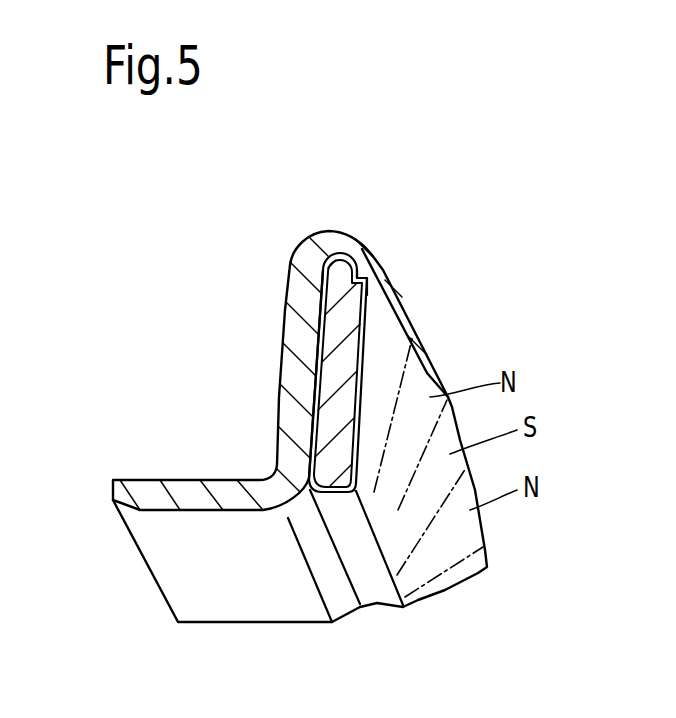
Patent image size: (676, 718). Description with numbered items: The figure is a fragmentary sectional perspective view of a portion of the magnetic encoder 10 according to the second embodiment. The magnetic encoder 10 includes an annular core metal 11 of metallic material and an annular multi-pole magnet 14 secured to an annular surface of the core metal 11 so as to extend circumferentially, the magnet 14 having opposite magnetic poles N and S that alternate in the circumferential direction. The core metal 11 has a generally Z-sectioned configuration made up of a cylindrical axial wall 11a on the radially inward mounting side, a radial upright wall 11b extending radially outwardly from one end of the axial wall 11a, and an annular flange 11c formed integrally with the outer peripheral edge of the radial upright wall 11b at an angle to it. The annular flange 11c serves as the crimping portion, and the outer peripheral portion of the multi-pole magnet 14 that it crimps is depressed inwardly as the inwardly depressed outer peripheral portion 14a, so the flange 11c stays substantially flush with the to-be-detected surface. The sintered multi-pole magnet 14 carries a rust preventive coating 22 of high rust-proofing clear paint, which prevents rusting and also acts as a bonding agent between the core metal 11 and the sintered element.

The magnetic encoder 10 is at (123, 233).
The core metal 11 is at (110, 295).
The cylindrical axial wall 11a is at (195, 492).
The radial upright wall 11b is at (289, 359).
The annular flange 11c is at (341, 229).
The multi-pole magnet 14 is at (343, 355).
The inwardly depressed outer peripheral portion 14a is at (360, 259).
The rust preventive coating 22 is at (362, 378).